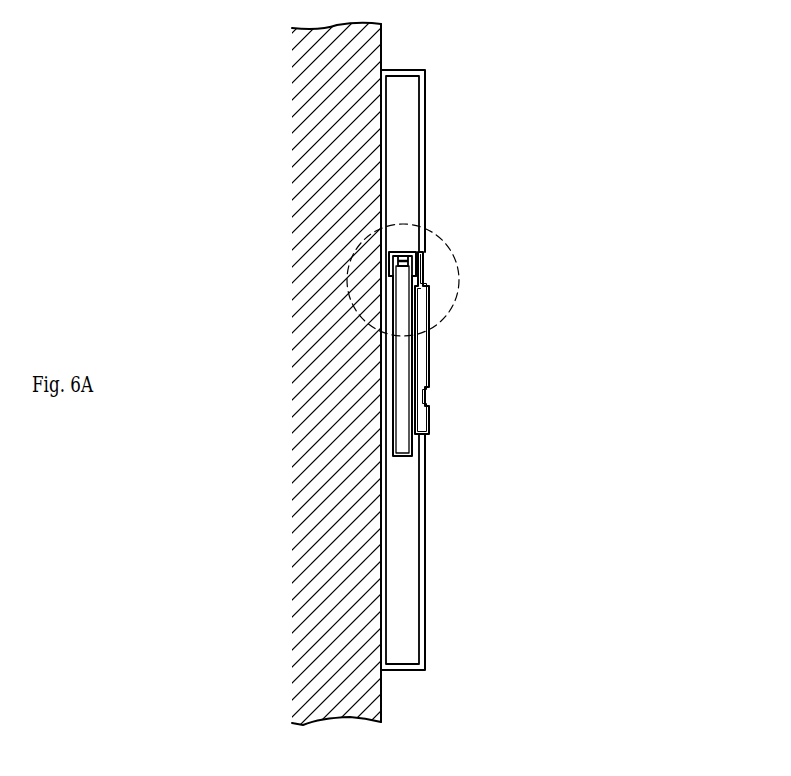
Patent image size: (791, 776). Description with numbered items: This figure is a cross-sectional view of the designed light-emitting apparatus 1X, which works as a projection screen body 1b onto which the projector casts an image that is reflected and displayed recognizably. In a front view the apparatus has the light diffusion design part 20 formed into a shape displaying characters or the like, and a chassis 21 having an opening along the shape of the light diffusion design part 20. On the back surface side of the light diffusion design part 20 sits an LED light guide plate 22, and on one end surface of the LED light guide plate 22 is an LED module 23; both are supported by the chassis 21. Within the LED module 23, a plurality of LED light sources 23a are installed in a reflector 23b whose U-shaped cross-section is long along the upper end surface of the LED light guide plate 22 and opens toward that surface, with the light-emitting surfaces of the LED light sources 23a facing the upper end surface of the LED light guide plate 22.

The designed light-emitting apparatus 1X is at (632, 193).
The projection screen body 1b is at (578, 72).
The light diffusion design part 20 is at (425, 418).
The chassis 21 is at (424, 122).
The LED light guide plate 22 is at (398, 352).
The LED module 23 is at (518, 162).
The LED light source 23a is at (413, 254).
The reflector 23b is at (401, 256).